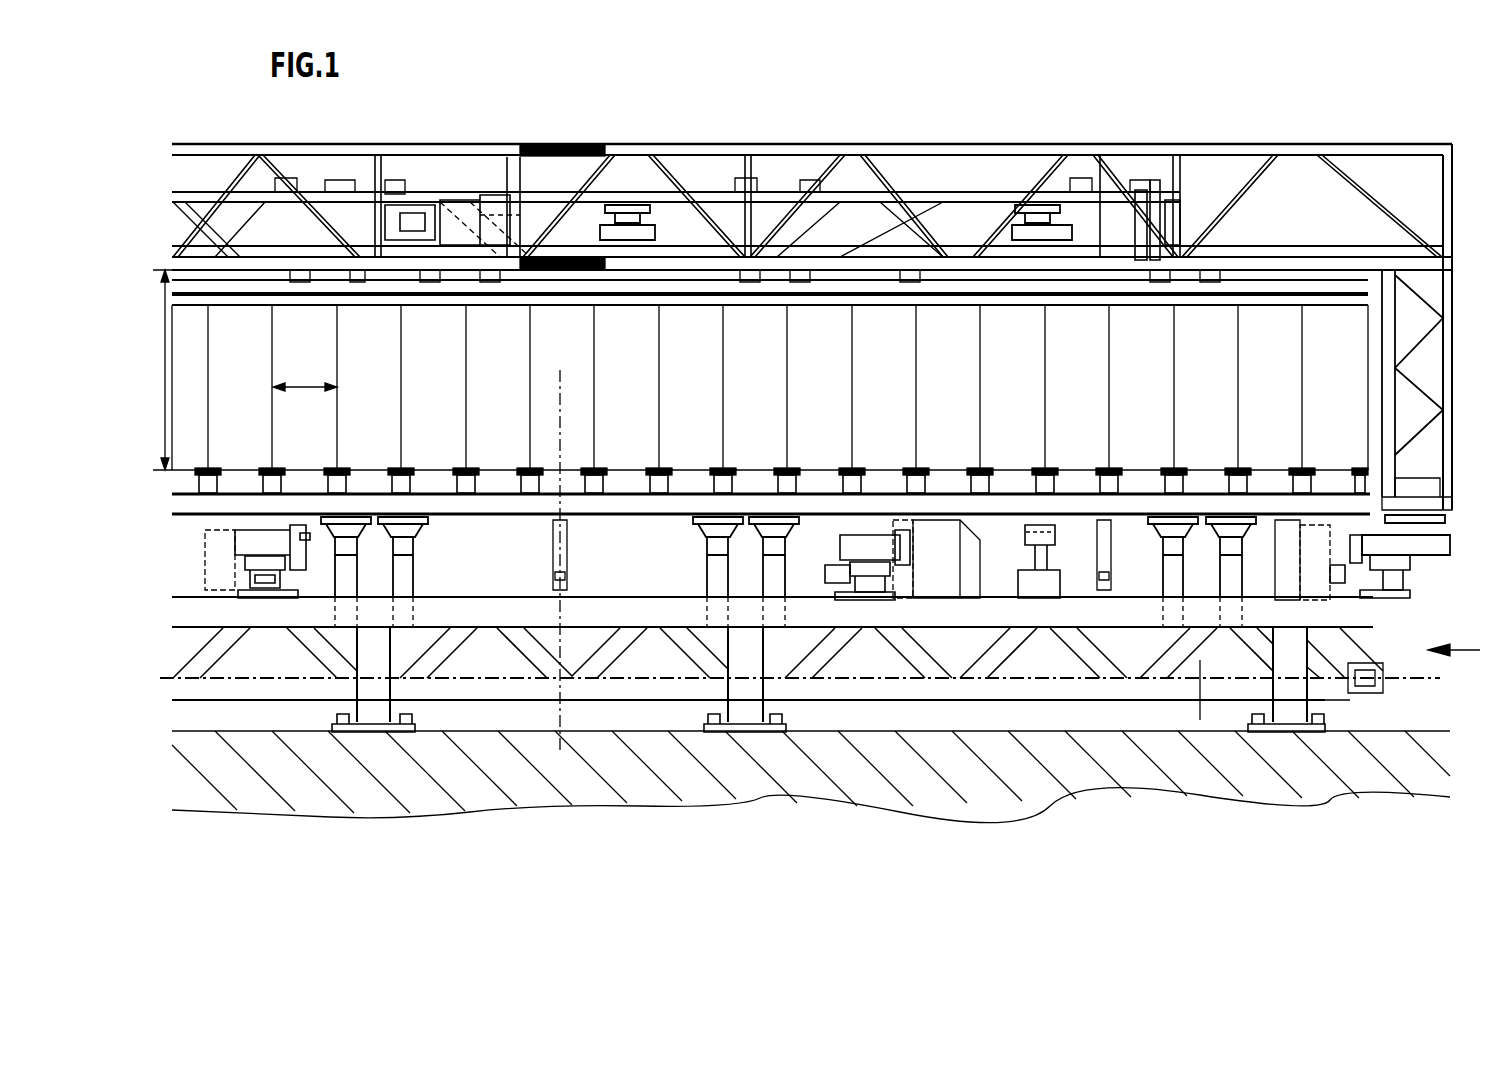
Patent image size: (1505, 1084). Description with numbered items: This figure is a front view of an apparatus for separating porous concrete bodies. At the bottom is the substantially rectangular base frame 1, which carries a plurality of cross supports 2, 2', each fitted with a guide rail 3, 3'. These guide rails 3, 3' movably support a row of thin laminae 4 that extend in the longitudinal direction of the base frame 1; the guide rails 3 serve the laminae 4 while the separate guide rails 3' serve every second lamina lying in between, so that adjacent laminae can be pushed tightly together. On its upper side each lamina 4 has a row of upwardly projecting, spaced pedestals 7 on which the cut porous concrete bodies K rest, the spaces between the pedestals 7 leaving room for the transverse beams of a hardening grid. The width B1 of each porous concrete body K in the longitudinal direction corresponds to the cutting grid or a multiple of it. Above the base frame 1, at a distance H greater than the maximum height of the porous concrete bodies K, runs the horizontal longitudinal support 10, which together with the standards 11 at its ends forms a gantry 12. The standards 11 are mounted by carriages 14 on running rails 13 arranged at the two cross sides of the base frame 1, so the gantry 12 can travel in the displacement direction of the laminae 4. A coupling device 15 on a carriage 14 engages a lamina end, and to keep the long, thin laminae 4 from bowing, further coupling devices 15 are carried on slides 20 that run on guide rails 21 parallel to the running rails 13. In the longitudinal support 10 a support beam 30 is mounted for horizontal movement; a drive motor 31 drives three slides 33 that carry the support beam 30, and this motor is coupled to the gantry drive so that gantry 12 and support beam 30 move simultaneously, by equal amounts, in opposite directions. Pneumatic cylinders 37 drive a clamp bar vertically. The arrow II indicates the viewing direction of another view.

The base frame 1 is at (1013, 625).
The cross support 2 is at (759, 581).
The cross support 2' is at (817, 582).
The guide rail 3 is at (759, 537).
The guide rail 3' is at (817, 538).
The lamina 4 is at (185, 510).
The pedestal 7 is at (200, 478).
The longitudinal support 10 is at (738, 146).
The standard 11 is at (1450, 378).
The gantry 12 is at (1455, 183).
The running rail 13 is at (1398, 578).
The carriage 14 is at (1418, 547).
The coupling device 15 is at (1405, 528).
The slide 20 is at (878, 600).
The guide rail 21 is at (858, 600).
The support beam 30 is at (684, 190).
The drive motor 31 is at (413, 215).
The slide 33 is at (1040, 225).
The pneumatic cylinder 37 is at (1147, 190).
The porous concrete body K is at (1315, 327).
The distance H is at (160, 370).
The width B1 is at (308, 372).
The viewing direction II is at (1454, 637).